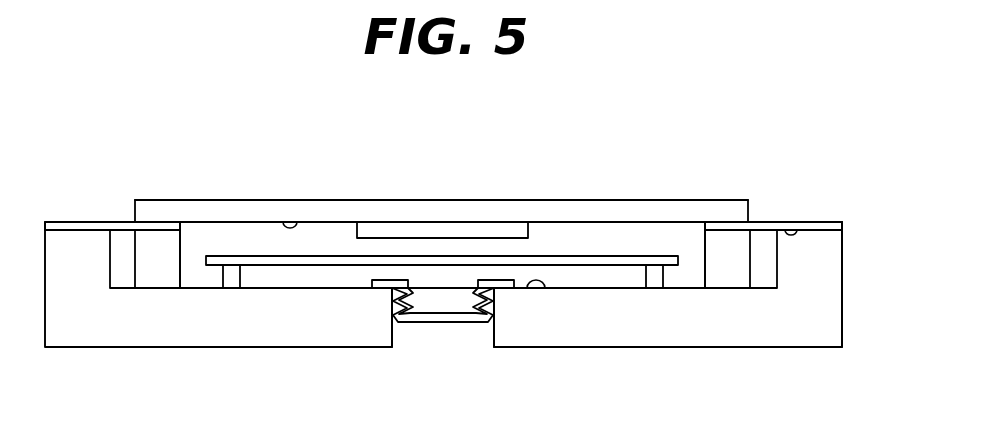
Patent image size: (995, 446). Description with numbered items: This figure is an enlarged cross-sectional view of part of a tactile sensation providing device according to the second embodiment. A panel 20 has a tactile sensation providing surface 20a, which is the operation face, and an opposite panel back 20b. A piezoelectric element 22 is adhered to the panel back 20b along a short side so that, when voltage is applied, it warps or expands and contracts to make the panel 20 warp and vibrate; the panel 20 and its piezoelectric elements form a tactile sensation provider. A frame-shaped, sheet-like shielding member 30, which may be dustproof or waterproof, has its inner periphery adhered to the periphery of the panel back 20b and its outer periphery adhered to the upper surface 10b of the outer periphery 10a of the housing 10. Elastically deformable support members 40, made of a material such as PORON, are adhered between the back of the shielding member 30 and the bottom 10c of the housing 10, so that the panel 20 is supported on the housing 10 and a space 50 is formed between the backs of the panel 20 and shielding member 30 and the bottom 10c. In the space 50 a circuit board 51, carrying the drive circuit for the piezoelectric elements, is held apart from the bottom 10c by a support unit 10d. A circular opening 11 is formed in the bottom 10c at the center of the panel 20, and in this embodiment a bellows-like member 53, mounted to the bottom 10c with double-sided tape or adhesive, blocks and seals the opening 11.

The housing 10 is at (805, 348).
The outer periphery of the housing 10a is at (832, 237).
The upper surface of the outer periphery 10b is at (794, 230).
The bottom of the housing 10c is at (537, 282).
The support unit 10d is at (232, 283).
The opening 11 is at (395, 347).
The panel 20 is at (535, 210).
The tactile sensation providing surface 20a is at (260, 198).
The panel back 20b is at (290, 222).
The piezoelectric element 22 is at (432, 230).
The shielding member 30 is at (91, 222).
The support member 40 is at (158, 281).
The space 50 is at (438, 270).
The circuit board 51 is at (598, 255).
The bellows-like member 53 is at (447, 323).